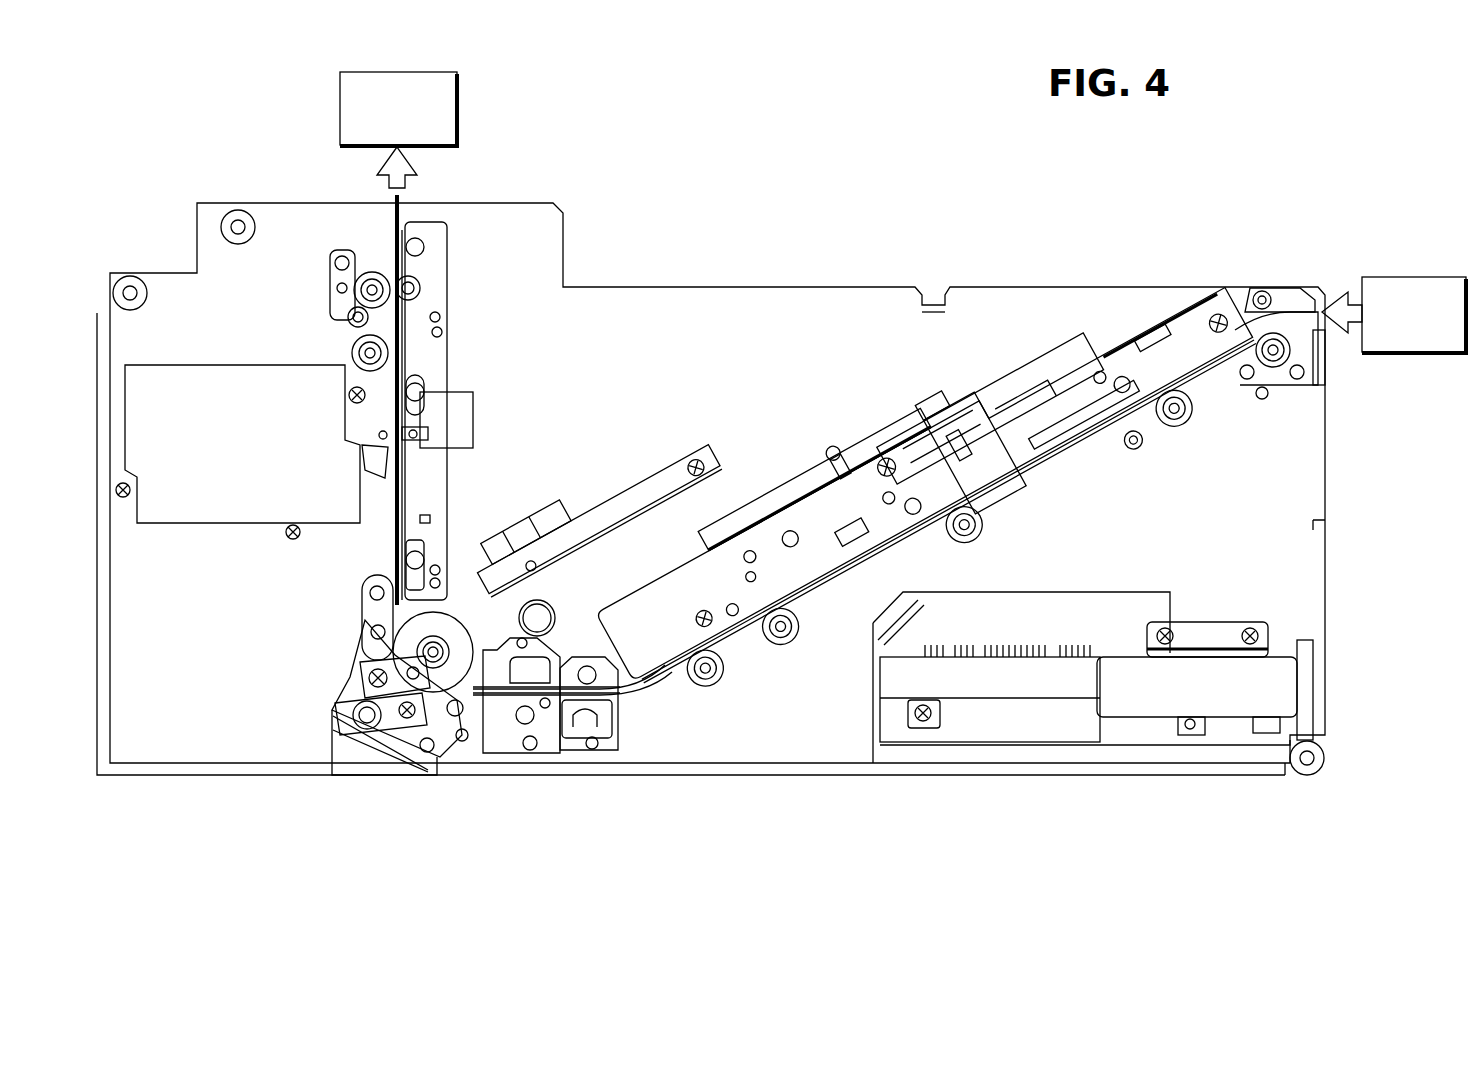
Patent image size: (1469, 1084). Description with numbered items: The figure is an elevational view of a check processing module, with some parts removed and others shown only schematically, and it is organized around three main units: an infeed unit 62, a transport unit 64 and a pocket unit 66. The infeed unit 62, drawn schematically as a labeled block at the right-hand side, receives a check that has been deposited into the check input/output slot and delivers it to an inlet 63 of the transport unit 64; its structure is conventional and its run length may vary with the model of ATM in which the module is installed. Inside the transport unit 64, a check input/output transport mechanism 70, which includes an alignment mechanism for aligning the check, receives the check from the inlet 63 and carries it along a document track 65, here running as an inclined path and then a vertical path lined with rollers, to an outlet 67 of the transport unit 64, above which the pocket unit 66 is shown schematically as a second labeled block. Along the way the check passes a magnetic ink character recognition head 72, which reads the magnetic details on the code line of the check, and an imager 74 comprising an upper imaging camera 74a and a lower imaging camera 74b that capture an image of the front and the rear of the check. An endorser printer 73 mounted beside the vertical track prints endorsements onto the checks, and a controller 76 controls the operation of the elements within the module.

The infeed unit 62 is at (1413, 258).
The inlet 63 is at (1322, 310).
The transport unit 64 is at (825, 180).
The document track 65 is at (397, 248).
The pocket unit 66 is at (428, 72).
The outlet 67 is at (395, 200).
The check input/output transport mechanism 70 is at (758, 360).
The magnetic ink character recognition (MICR) head 72 is at (884, 598).
The endorser printer 73 is at (473, 420).
The imager 74 is at (551, 768).
The upper imaging camera 74a is at (547, 648).
The lower imaging camera 74b is at (606, 740).
The controller 76 is at (1048, 680).